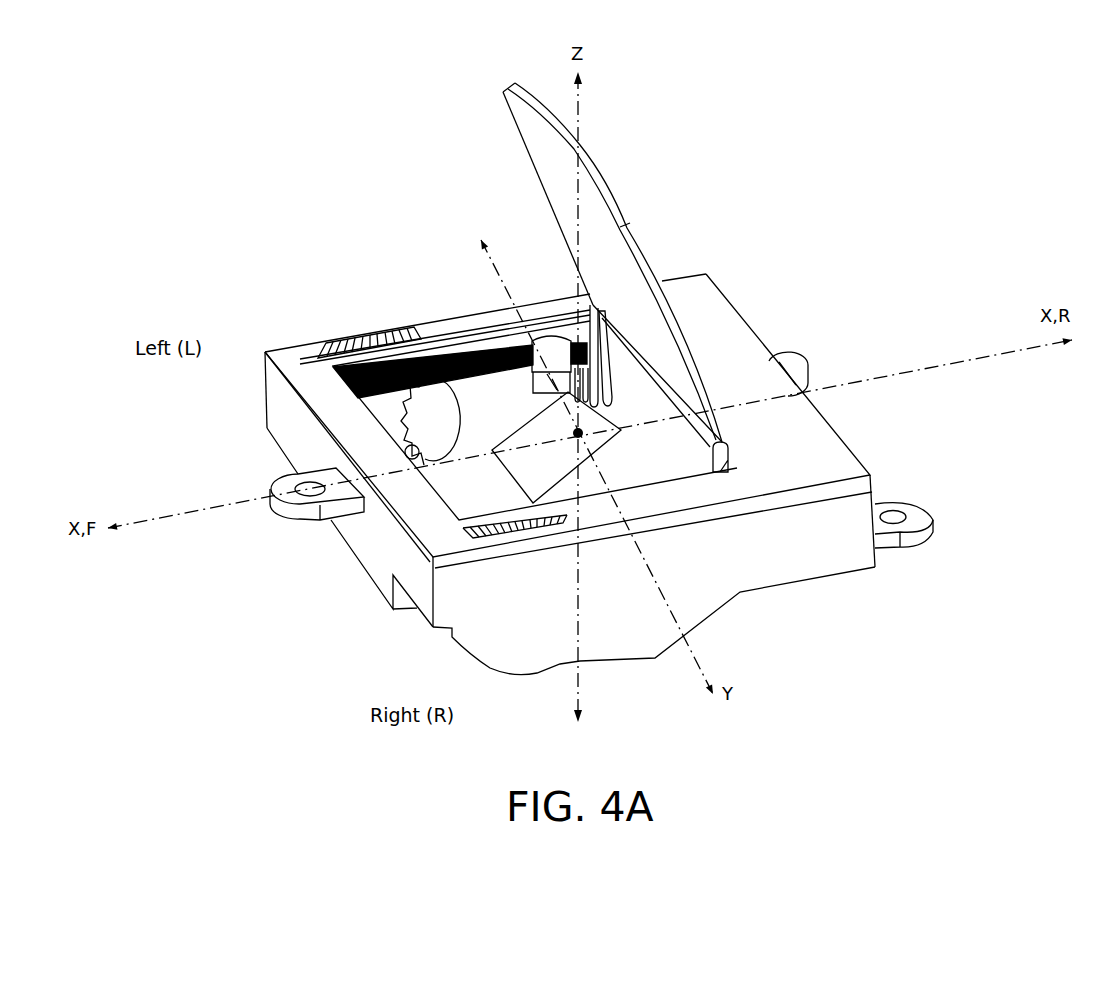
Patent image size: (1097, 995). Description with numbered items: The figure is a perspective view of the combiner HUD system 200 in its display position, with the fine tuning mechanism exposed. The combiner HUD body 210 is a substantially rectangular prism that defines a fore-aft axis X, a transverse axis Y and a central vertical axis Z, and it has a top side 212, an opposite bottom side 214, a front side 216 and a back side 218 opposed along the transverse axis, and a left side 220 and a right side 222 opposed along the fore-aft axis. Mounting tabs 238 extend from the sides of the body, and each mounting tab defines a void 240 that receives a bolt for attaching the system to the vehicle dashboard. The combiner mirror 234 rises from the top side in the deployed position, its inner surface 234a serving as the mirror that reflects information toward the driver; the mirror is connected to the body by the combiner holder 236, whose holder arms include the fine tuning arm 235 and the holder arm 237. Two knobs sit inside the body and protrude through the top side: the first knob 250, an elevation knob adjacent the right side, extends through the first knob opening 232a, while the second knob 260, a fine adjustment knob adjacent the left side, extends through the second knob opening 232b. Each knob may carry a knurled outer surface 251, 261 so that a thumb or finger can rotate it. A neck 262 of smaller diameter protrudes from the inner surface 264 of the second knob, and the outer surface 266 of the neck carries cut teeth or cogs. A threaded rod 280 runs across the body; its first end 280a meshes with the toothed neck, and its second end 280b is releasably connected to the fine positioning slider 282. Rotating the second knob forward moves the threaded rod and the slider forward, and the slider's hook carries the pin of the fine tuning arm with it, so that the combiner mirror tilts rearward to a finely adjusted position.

The combiner HUD system 200 is at (865, 208).
The combiner HUD body 210 is at (286, 378).
The top side 212 is at (703, 305).
The bottom side 214 is at (413, 614).
The front side 216 is at (292, 405).
The back side 218 is at (879, 494).
The left side 220 is at (300, 348).
The right side 222 is at (812, 565).
The first knob opening 232a is at (472, 538).
The second knob opening 232b is at (398, 338).
The combiner mirror 234 is at (512, 84).
The inner surface 234a is at (554, 167).
The fine tuning arm 235 is at (610, 378).
The combiner holder 236 is at (732, 441).
The holder arm 237 is at (733, 466).
The mounting tab 238 is at (307, 517).
The void 240 is at (298, 481).
The first knob 250 is at (474, 538).
The knurled outer surface 251 is at (538, 530).
The second knob 260 is at (382, 335).
The knurled outer surface 261 is at (350, 333).
The neck 262 is at (403, 397).
The inner surface 264 is at (432, 421).
The outer surface 266 is at (419, 449).
The threaded rod 280 is at (465, 350).
The first end 280a is at (266, 352).
The second end 280b is at (540, 362).
The fine positioning slider 282 is at (553, 337).